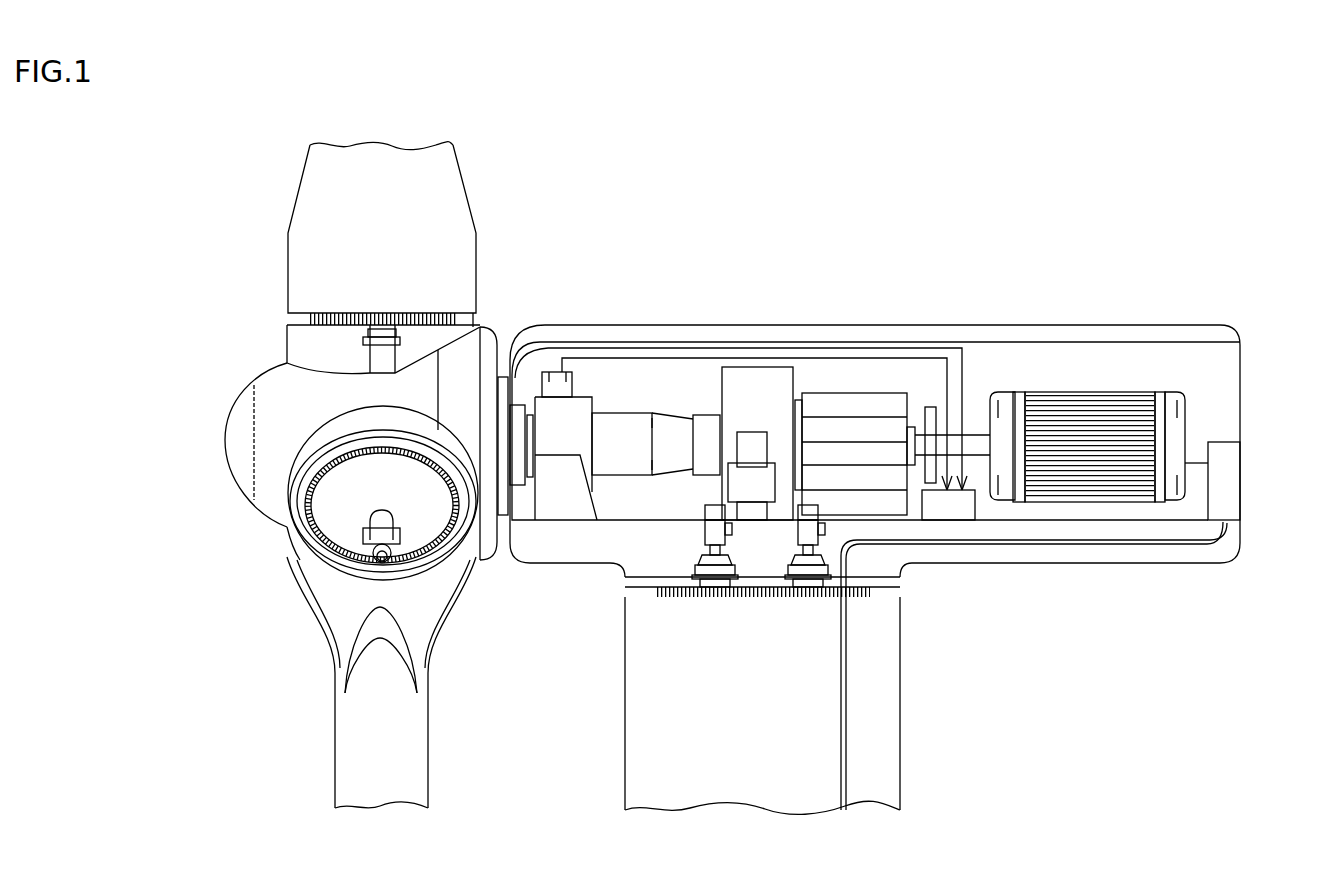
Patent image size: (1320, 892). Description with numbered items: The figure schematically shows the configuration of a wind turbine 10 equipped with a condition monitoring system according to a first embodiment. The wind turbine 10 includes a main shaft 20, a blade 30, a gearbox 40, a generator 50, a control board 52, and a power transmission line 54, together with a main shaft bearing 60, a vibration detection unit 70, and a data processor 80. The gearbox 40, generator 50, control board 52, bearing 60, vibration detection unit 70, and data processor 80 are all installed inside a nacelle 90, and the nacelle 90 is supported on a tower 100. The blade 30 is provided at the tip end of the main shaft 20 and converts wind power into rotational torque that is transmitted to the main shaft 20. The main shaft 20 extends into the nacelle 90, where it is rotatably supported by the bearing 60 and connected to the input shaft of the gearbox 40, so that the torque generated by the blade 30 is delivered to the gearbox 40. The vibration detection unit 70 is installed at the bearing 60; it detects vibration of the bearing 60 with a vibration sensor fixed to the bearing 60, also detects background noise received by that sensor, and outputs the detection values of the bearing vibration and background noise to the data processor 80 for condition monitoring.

The wind turbine 10 is at (1199, 200).
The main shaft 20 is at (270, 403).
The blade 30 is at (428, 195).
The gearbox 40 is at (802, 370).
The generator 50 is at (1088, 415).
The control board 52 is at (1230, 481).
The power transmission line 54 is at (1133, 545).
The main shaft bearing 60 is at (572, 395).
The vibration detection unit 70 is at (556, 378).
The data processor 80 is at (950, 512).
The nacelle 90 is at (1008, 330).
The tower 100 is at (868, 728).